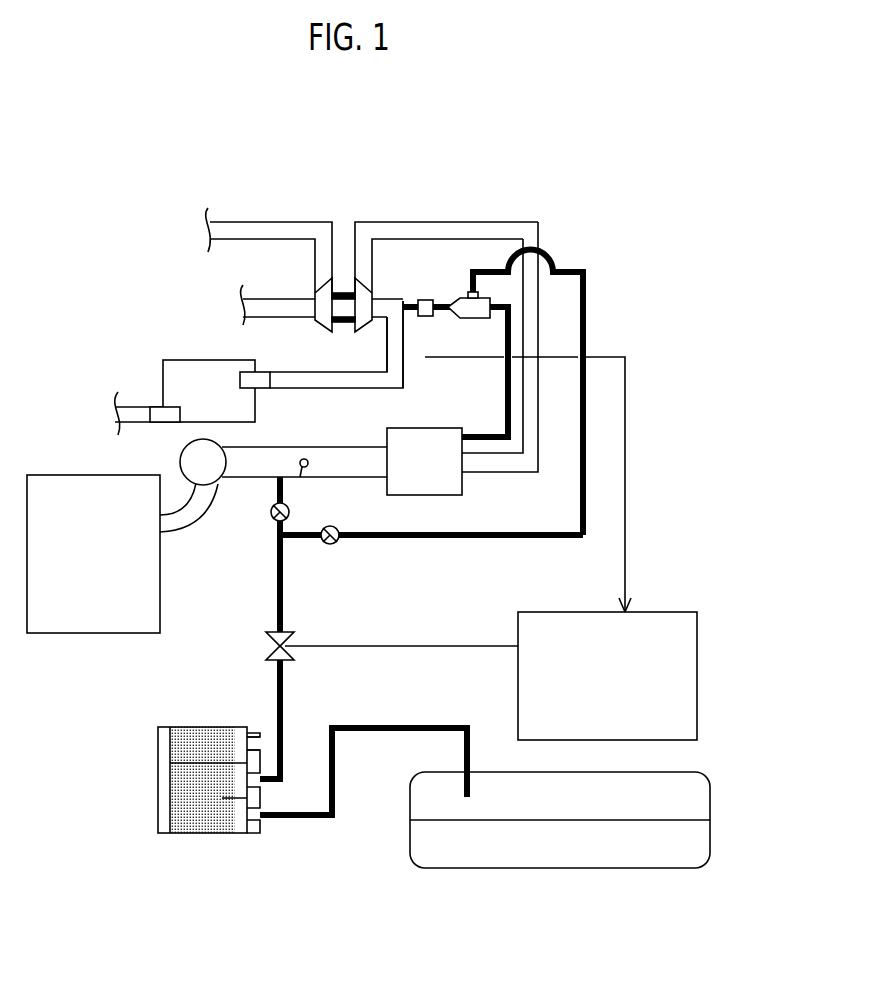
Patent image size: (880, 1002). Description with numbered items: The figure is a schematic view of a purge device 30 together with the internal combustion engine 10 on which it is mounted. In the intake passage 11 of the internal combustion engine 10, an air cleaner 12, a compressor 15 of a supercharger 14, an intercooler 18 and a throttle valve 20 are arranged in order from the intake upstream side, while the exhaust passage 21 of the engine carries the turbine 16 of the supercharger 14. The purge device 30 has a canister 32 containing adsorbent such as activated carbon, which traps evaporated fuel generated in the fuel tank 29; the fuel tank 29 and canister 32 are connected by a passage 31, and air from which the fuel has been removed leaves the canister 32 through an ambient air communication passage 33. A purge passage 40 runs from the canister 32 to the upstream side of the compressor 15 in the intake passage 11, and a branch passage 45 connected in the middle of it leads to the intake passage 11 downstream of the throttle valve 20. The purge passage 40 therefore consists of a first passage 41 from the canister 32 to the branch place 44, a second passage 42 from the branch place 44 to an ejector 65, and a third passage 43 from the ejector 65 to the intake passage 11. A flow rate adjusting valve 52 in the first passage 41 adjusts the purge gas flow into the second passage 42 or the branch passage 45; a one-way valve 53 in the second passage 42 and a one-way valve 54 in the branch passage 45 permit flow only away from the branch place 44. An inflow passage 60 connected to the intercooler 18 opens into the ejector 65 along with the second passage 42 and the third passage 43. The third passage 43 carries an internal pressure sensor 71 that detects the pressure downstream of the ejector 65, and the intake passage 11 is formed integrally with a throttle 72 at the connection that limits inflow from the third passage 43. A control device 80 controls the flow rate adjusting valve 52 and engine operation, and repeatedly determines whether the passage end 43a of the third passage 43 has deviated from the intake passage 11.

The internal combustion engine 10 is at (86, 394).
The intake passage 11 is at (190, 529).
The air cleaner 12 is at (184, 360).
The supercharger 14 is at (388, 290).
The compressor 15 is at (364, 282).
The turbine 16 is at (328, 282).
The intercooler 18 is at (426, 428).
The throttle valve 20 is at (306, 458).
The exhaust passage 21 is at (262, 240).
The fuel tank 29 is at (711, 806).
The purge device 30 is at (126, 680).
The passage 31 is at (400, 726).
The canister 32 is at (157, 778).
The ambient air communication passage 33 is at (256, 733).
The purge passage 40 is at (358, 583).
The first passage 41 is at (277, 556).
The second passage 42 is at (456, 539).
The third passage 43 is at (441, 298).
The passage end 43a is at (406, 312).
The branch place 44 is at (283, 542).
The branch passage 45 is at (277, 492).
The flow rate adjusting valve 52 is at (292, 630).
The one-way valve 53 is at (341, 541).
The one-way valve 54 is at (270, 513).
The inflow passage 60 is at (504, 372).
The ejector 65 is at (473, 318).
The internal pressure sensor 71 is at (432, 317).
The throttle 72 is at (398, 306).
The control device 80 is at (698, 673).